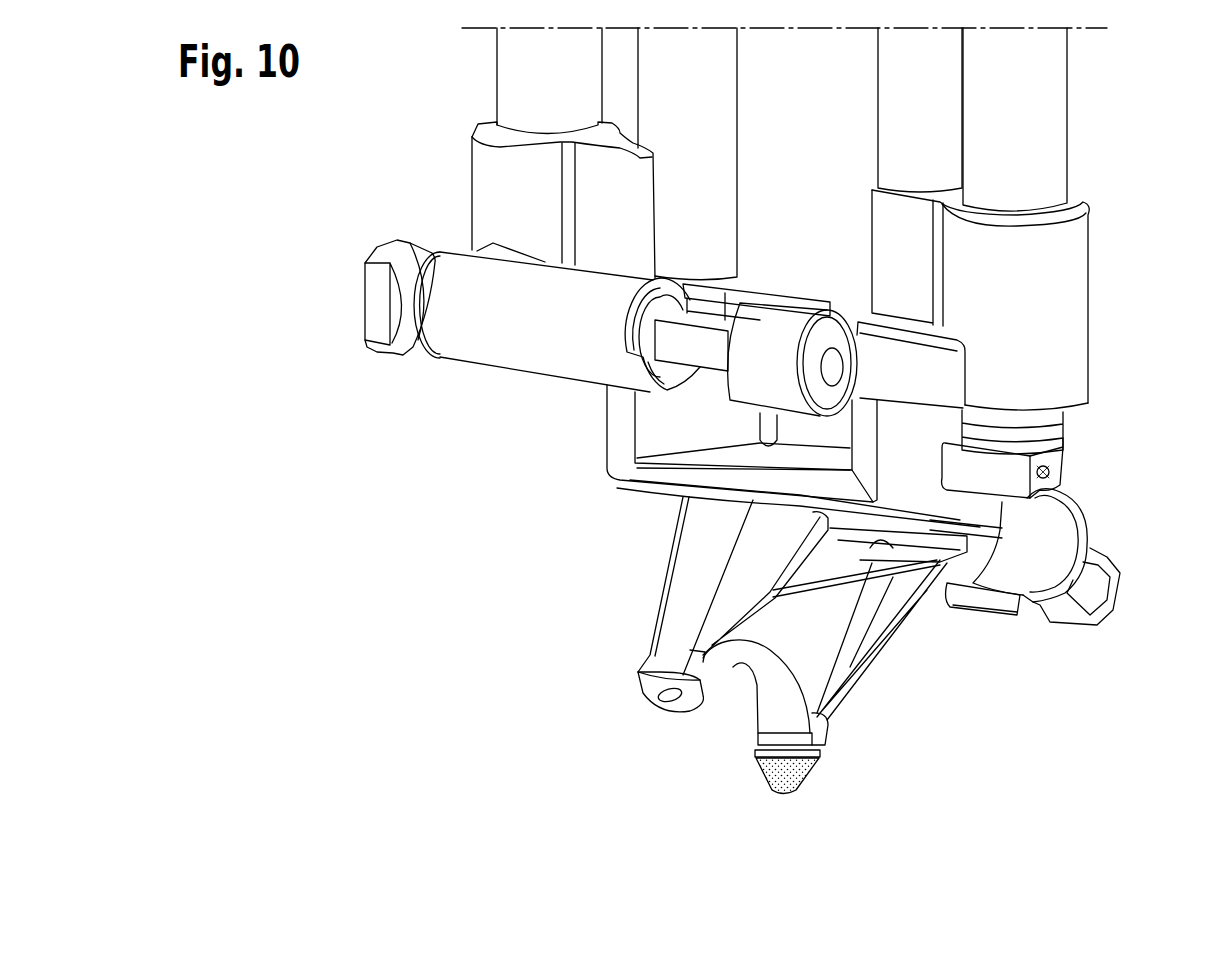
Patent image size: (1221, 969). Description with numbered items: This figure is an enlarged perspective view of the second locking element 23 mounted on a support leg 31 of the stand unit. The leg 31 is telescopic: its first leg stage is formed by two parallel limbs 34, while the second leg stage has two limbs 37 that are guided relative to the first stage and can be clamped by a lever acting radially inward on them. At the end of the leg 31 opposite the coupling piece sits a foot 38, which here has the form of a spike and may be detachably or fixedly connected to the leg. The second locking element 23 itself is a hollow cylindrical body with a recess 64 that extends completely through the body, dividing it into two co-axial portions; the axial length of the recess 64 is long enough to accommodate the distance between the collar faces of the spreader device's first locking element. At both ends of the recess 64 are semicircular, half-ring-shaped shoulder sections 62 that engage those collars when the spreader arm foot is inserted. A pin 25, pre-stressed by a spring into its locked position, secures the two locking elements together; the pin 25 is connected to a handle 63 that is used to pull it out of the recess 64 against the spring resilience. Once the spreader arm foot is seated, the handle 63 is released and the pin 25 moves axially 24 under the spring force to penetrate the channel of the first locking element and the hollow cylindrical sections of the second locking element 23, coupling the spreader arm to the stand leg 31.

The support leg 31 is at (1122, 193).
The limbs 34 is at (512, 65).
The limbs 37 is at (725, 67).
The handle 63 is at (385, 312).
The second locking element 23 is at (418, 362).
The shoulder sections 62 is at (670, 385).
The pin 25 is at (710, 357).
The axial movement of the pin 24 is at (822, 367).
The recess 64 is at (718, 322).
The foot 38 is at (832, 773).